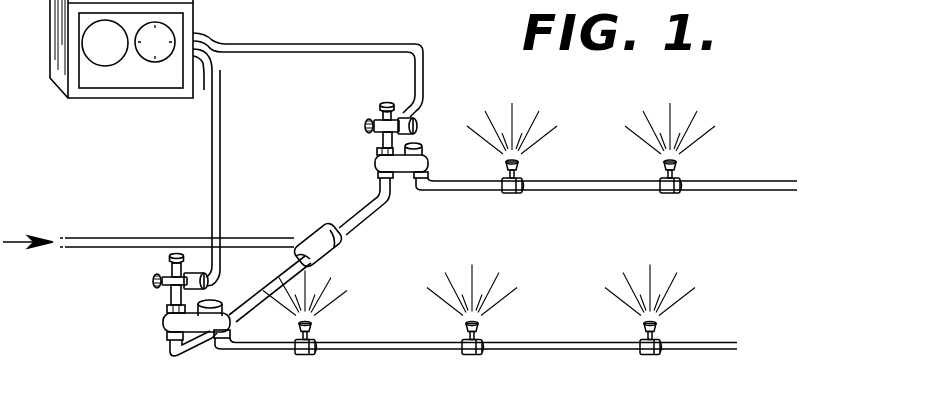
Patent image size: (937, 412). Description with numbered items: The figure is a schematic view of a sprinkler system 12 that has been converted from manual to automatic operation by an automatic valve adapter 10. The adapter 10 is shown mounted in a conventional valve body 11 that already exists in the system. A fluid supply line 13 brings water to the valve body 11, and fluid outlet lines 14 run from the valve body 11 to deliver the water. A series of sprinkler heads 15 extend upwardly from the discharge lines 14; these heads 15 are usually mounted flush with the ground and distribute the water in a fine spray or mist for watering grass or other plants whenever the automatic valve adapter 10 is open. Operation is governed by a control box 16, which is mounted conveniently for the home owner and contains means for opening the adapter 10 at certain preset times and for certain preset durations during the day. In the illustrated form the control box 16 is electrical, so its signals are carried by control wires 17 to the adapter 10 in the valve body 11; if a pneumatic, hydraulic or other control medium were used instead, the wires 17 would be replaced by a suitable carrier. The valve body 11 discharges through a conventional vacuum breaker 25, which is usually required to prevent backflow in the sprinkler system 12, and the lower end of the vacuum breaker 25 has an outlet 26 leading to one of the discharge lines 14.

The automatic valve adapter 10 is at (135, 296).
The valve body 11 is at (170, 323).
The sprinkler system 12 is at (523, 231).
The fluid supply line 13 is at (95, 238).
The fluid outlet lines 14 is at (583, 190).
The sprinkler heads 15 is at (665, 165).
The control box 16 is at (193, 10).
The control wires 17 is at (298, 53).
The vacuum breaker 25 is at (226, 290).
The outlet 26 is at (217, 333).